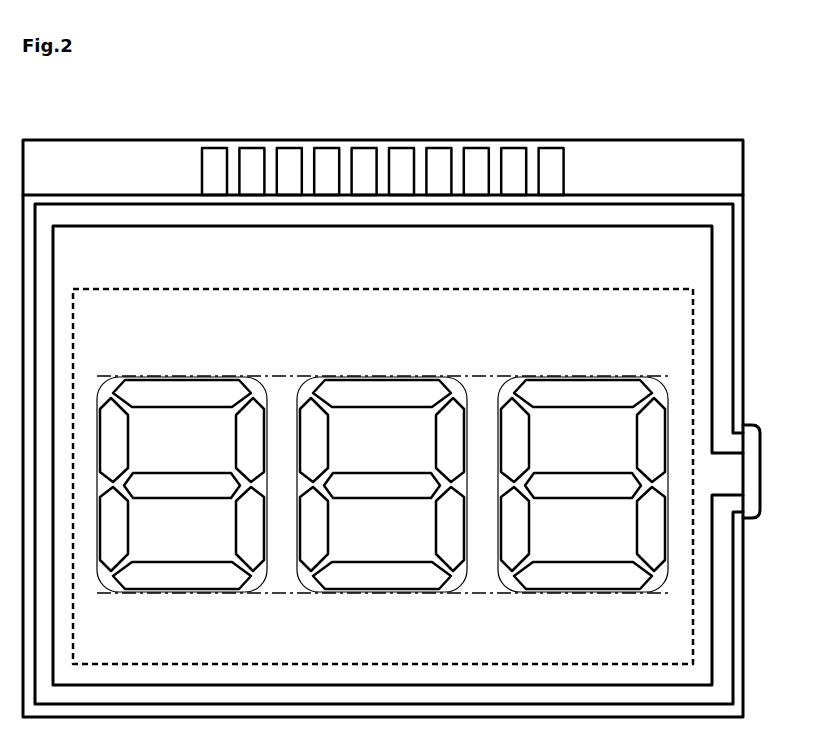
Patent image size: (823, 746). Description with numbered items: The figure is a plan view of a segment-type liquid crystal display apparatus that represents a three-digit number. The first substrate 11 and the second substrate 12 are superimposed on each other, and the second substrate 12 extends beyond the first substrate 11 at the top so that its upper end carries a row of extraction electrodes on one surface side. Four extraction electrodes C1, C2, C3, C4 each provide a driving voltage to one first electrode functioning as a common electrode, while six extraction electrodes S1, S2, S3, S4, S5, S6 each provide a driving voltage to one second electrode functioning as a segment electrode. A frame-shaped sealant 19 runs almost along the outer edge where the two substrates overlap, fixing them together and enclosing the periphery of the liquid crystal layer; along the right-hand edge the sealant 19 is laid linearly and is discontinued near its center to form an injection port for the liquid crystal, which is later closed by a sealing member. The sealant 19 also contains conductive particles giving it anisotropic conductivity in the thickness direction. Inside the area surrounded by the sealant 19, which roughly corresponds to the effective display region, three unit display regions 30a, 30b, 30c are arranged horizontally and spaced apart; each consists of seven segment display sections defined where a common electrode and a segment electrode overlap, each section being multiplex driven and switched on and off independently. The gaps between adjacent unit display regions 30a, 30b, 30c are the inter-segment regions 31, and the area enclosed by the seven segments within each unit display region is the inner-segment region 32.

The first substrate 11 is at (730, 192).
The second substrate 12 is at (692, 138).
The sealant 19 is at (735, 330).
The unit display region 30a is at (223, 361).
The unit display region 30b is at (429, 361).
The unit display region 30c is at (628, 361).
The inter-segment region 31 is at (276, 572).
The inner-segment region 32 is at (158, 428).
The extraction electrode S1 is at (212, 162).
The extraction electrode S2 is at (249, 162).
The extraction electrode S3 is at (287, 162).
The extraction electrode S4 is at (324, 162).
The extraction electrode S5 is at (362, 162).
The extraction electrode S6 is at (399, 162).
The extraction electrode C1 is at (436, 162).
The extraction electrode C2 is at (474, 162).
The extraction electrode C3 is at (511, 162).
The extraction electrode C4 is at (549, 162).